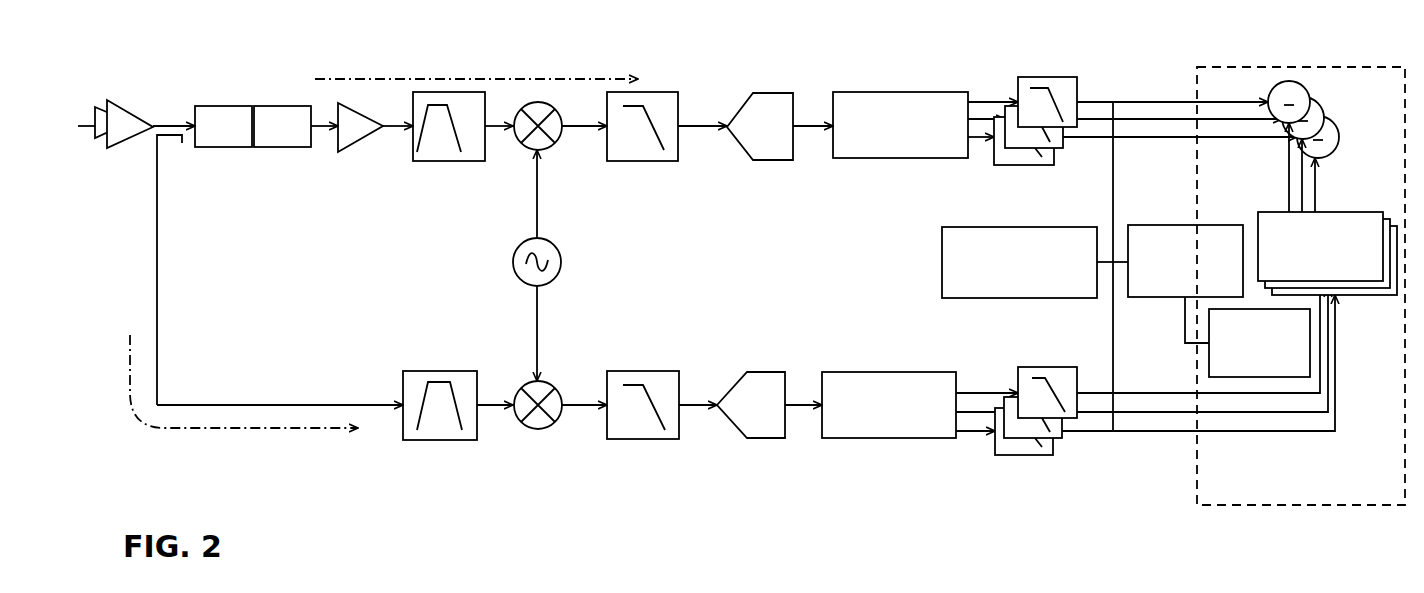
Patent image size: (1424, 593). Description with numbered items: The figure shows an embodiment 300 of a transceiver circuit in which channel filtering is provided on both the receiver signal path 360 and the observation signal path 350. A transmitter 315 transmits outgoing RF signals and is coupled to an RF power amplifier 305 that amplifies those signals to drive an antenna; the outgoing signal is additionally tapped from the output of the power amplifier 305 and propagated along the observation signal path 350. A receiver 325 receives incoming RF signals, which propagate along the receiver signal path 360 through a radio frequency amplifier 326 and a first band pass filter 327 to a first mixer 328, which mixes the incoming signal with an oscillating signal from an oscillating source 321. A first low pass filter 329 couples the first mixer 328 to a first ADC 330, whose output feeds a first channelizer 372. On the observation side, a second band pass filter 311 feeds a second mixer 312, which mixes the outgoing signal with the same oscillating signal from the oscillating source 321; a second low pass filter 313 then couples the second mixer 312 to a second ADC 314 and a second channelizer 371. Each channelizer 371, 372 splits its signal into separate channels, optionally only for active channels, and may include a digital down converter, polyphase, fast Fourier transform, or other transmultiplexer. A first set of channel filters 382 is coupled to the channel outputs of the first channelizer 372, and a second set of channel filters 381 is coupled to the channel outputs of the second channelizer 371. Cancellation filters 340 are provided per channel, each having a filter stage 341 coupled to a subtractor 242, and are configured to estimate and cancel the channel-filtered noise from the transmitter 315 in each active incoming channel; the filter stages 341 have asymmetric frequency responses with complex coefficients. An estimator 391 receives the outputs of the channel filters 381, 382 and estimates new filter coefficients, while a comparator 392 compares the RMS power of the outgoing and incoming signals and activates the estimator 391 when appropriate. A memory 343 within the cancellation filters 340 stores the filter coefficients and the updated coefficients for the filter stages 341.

The embodiment 300 is at (170, 51).
The RF power amplifier 305 is at (108, 150).
The transmitter 315 is at (226, 149).
The receiver 325 is at (281, 104).
The radio frequency amplifier 326 is at (359, 143).
The first band pass filter 327 is at (441, 150).
The first mixer 328 is at (547, 145).
The first low pass filter 329 is at (654, 101).
The first ADC 330 is at (766, 102).
The first channelizer 372 is at (882, 151).
The first set of channel filters 382 is at (1060, 78).
The subtractor 242 is at (1298, 90).
The cancellation filter 340 is at (1316, 496).
The filter stage 341 is at (1337, 271).
The memory 343 is at (1241, 368).
The estimator 391 is at (1167, 290).
The comparator 392 is at (1001, 290).
The receiver signal path 360 is at (476, 67).
The observation signal path 350 is at (244, 411).
The second band pass filter 311 is at (429, 433).
The second mixer 312 is at (541, 426).
The second low pass filter 313 is at (639, 429).
The second ADC 314 is at (760, 430).
The second channelizer 371 is at (871, 431).
The second set of channel filters 381 is at (1018, 456).
The oscillating source 321 is at (550, 276).